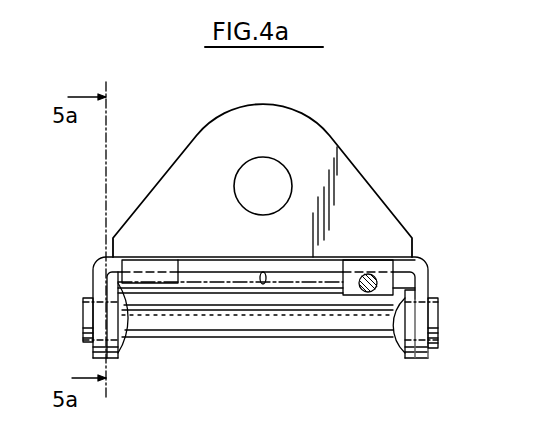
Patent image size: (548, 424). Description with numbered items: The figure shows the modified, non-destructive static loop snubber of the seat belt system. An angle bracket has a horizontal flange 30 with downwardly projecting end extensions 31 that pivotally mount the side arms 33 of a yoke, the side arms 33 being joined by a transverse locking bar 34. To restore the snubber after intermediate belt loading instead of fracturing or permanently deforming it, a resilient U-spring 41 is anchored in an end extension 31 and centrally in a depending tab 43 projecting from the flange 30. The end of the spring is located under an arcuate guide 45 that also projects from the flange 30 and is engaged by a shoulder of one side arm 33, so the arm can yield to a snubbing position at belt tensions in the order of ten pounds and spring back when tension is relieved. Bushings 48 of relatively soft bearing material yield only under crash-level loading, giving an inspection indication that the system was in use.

The horizontal flange 30 is at (278, 265).
The end extensions 31 is at (423, 287).
The side arms 33 is at (113, 328).
The transverse locking bar 34 is at (257, 337).
The resilient U-spring 41 is at (216, 280).
The depending tab 43 is at (347, 297).
The arcuate guide 45 is at (152, 263).
The bushings 48 is at (100, 300).